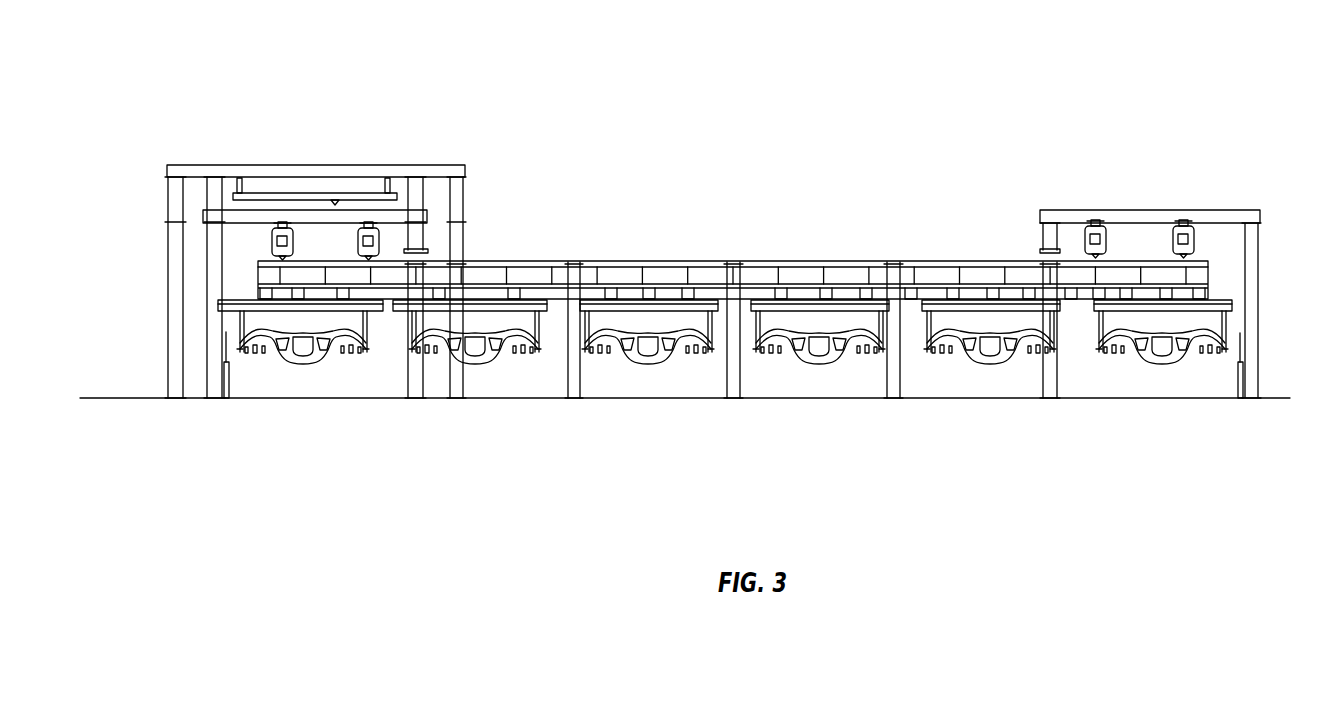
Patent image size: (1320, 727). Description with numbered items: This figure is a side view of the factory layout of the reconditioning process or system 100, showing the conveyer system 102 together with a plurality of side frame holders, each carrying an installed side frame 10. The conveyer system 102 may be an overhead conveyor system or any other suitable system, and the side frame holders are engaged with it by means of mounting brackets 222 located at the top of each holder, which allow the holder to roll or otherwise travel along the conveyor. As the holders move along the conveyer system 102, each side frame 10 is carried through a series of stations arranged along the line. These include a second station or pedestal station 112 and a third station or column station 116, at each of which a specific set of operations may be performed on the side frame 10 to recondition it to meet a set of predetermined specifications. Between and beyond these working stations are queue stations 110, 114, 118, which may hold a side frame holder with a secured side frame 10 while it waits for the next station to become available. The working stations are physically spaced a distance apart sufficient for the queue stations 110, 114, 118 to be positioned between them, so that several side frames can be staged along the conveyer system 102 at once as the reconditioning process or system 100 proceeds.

The side frame 10 is at (647, 362).
The reconditioning process or system 100 is at (802, 97).
The conveyer system 102 is at (493, 283).
The queue station 110 is at (470, 400).
The second station or pedestal station 112 is at (687, 383).
The queue station 114 is at (857, 400).
The third station or column station 116 is at (985, 383).
The queue station 118 is at (1152, 398).
The mounting bracket 222 is at (277, 287).